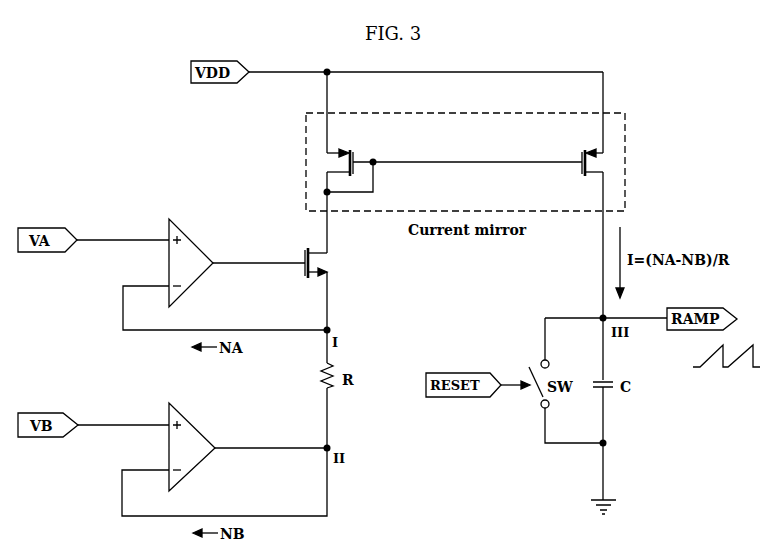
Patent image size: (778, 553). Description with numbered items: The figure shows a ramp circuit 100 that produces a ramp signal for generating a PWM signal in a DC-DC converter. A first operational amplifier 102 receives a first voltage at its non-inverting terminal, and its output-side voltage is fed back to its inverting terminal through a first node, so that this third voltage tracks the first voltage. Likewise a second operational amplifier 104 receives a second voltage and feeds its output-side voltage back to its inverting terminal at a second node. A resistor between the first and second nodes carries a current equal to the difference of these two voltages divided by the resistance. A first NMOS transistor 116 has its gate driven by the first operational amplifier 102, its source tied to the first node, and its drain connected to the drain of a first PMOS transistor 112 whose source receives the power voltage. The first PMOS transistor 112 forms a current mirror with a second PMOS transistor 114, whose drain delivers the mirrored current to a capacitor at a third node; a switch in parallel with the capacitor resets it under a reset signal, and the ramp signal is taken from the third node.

The ramp circuit 100 is at (100, 75).
The first operational amplifier 102 is at (193, 239).
The second operational amplifier 104 is at (193, 424).
The first PMOS transistor 112 is at (355, 156).
The second PMOS transistor 114 is at (578, 156).
The first NMOS transistor 116 is at (303, 254).